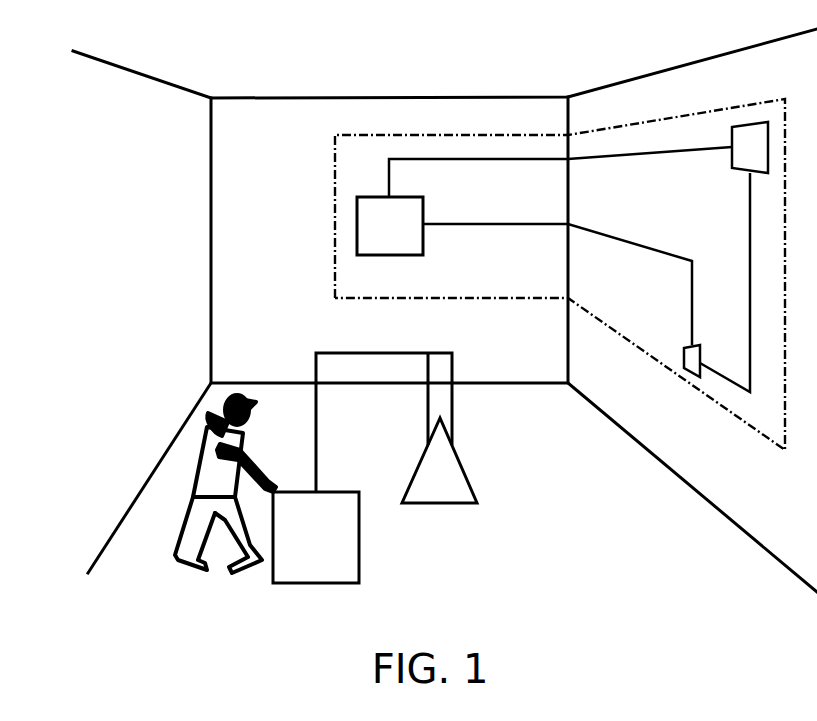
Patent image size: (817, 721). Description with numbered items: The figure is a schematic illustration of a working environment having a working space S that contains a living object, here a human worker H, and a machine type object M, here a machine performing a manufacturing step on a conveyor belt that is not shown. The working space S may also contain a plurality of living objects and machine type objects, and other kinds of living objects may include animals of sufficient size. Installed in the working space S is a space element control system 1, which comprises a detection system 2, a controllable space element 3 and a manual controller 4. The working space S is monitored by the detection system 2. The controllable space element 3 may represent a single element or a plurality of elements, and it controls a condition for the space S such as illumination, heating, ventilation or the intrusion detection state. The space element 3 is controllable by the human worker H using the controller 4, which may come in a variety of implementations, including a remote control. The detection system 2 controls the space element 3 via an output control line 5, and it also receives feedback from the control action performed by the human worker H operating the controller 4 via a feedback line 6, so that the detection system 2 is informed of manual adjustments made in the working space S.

The space element control system 1 is at (642, 125).
The detection system 2 is at (357, 224).
The controllable space element 3 is at (750, 122).
The manual controller 4 is at (690, 369).
The output control line 5 is at (477, 160).
The feedback line 6 is at (477, 225).
The working space S is at (261, 126).
The human worker H is at (205, 440).
The machine type object M is at (359, 540).